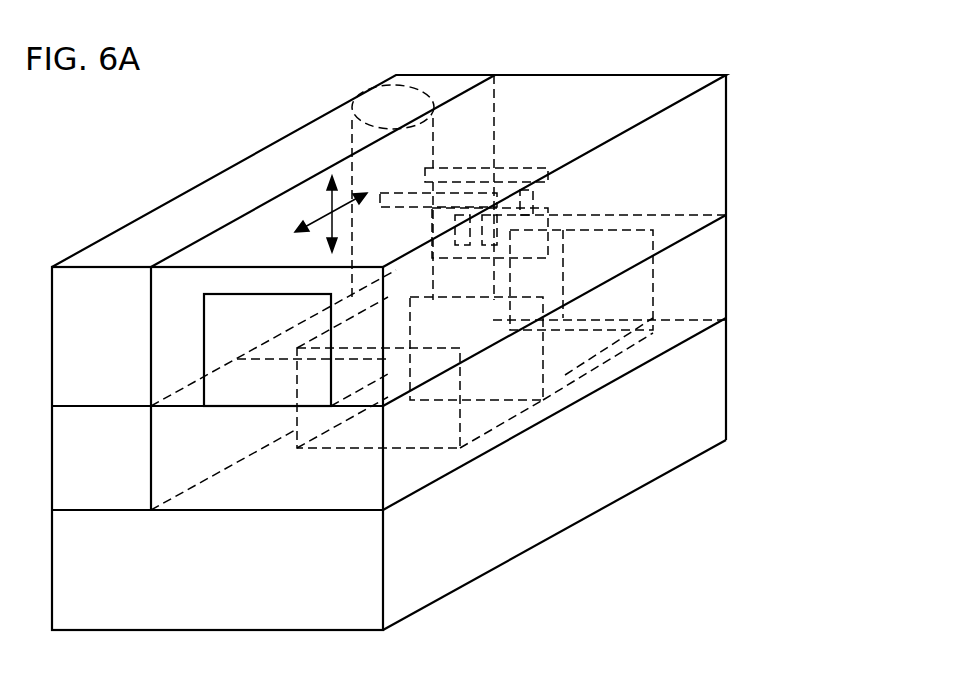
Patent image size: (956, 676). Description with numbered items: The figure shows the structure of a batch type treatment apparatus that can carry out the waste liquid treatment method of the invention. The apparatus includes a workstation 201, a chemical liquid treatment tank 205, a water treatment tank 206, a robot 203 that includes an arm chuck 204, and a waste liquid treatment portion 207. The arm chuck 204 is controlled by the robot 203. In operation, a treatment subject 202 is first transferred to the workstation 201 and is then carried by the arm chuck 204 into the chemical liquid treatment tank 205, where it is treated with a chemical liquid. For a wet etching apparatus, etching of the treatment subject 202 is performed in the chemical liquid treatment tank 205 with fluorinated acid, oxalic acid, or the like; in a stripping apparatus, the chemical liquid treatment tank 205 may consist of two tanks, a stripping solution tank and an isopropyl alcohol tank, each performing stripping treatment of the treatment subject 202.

The workstation 201 is at (250, 387).
The treatment subject 202 is at (603, 220).
The robot 203 is at (372, 106).
The arm chuck 204 is at (515, 175).
The chemical liquid treatment tank 205 is at (578, 257).
The water treatment tank 206 is at (433, 328).
The waste liquid treatment portion 207 is at (688, 387).